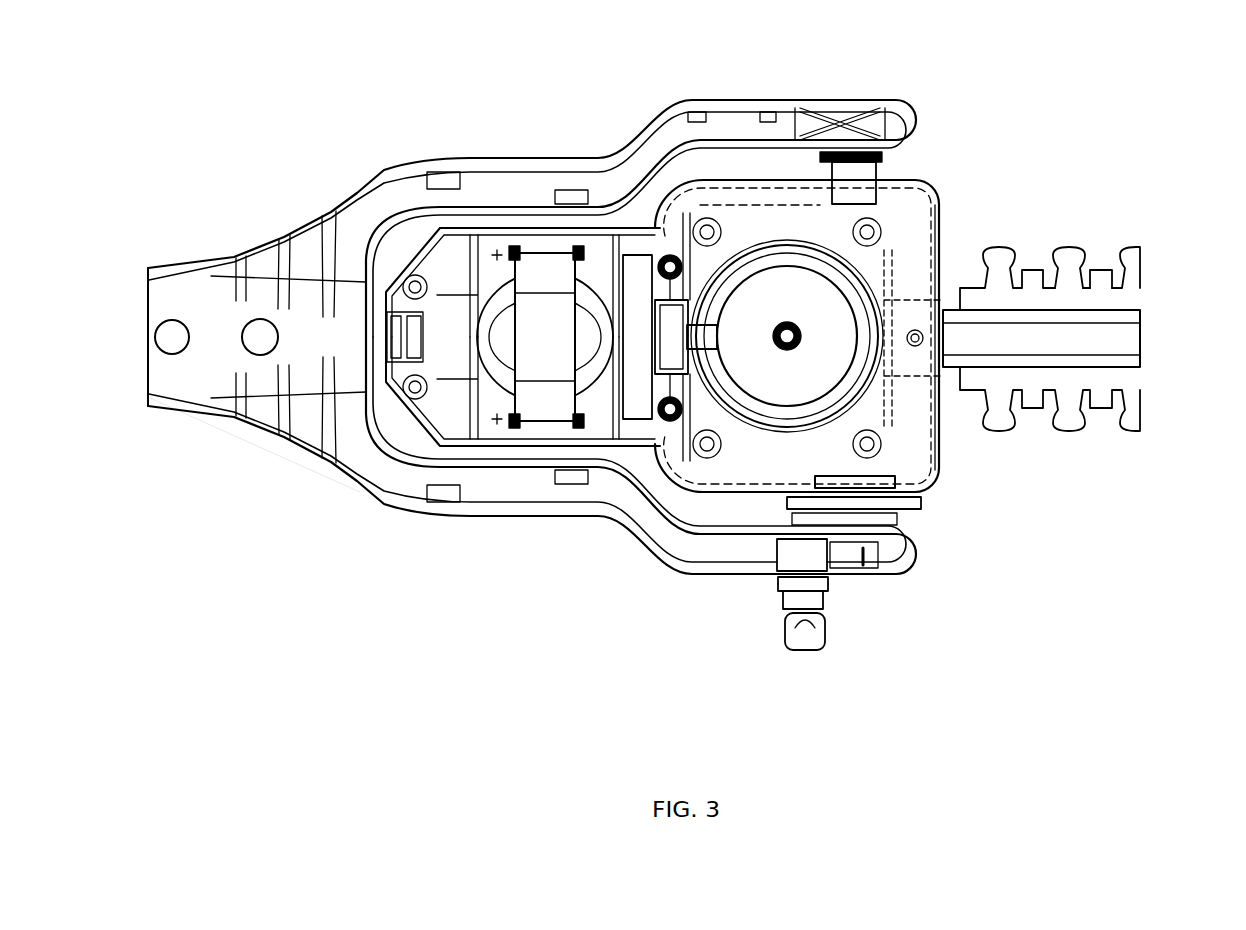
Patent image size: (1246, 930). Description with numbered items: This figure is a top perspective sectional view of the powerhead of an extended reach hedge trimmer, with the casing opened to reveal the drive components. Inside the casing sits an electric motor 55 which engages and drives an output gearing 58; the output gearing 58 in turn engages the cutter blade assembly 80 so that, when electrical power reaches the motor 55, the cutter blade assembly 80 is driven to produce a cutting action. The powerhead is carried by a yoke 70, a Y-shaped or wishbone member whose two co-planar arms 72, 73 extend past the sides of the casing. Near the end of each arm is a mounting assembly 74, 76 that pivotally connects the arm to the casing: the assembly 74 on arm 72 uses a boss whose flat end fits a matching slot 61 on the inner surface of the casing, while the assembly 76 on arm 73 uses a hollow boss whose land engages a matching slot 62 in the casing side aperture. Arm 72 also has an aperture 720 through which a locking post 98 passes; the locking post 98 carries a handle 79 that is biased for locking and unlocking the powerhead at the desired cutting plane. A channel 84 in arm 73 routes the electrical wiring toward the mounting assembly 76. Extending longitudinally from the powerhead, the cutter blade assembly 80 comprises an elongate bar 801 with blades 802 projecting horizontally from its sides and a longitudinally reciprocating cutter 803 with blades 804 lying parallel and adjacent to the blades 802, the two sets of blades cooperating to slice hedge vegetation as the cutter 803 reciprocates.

The electric motor 55 is at (548, 322).
The output gearing 58 is at (803, 295).
The slot 61 is at (928, 494).
The slot 62 is at (888, 165).
The yoke 70 is at (395, 520).
The yoke arm 72 is at (512, 515).
The yoke arm 73 is at (545, 160).
The yoke mounting assembly 74 is at (864, 552).
The yoke mounting assembly 76 is at (900, 157).
The handle 79 is at (812, 638).
The cutter blade assembly 80 is at (1086, 363).
The channel 84 is at (620, 183).
The locking post 98 is at (768, 630).
The aperture 720 is at (783, 578).
The elongate bar 801 is at (1126, 338).
The blades 802 is at (1068, 253).
The cutter 803 is at (1126, 298).
The blades 804 is at (1100, 275).